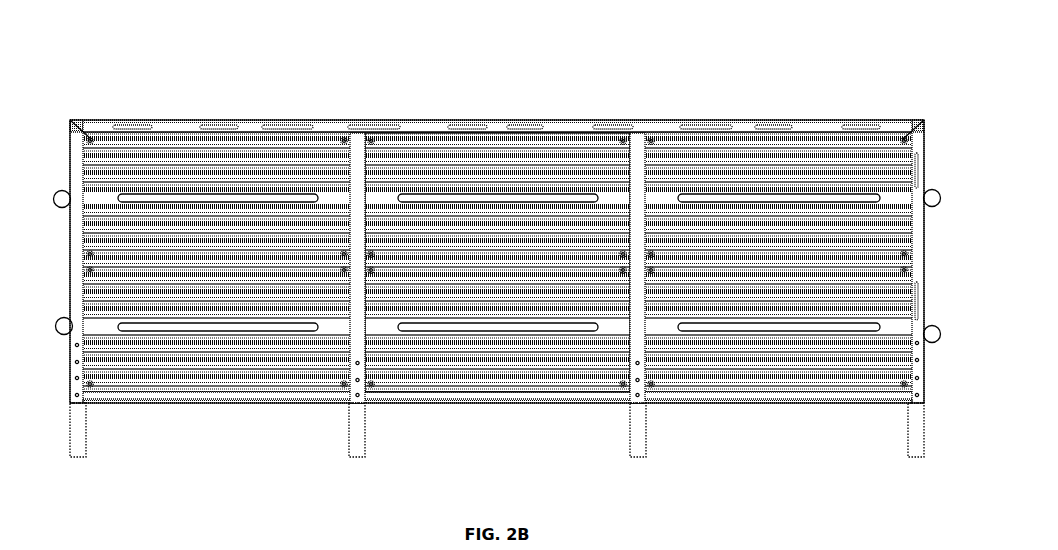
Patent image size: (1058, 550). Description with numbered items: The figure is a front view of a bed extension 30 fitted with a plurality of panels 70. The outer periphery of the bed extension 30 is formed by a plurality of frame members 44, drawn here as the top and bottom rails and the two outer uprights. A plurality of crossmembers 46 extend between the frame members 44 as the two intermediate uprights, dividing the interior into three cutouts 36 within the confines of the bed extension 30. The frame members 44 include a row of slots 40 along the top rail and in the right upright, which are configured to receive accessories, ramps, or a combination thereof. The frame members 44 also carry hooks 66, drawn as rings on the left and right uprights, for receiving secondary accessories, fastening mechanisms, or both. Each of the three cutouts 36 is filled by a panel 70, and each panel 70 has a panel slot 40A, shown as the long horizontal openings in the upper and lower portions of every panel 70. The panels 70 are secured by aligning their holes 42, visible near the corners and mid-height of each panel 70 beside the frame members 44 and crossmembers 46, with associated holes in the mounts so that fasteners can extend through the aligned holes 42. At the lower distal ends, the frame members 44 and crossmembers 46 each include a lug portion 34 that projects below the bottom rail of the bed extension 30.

The bed extension 30 is at (828, 40).
The lug portion 34 is at (82, 432).
The cutout 36 is at (567, 150).
The slot 40 is at (226, 127).
The panel slot 40A is at (290, 200).
The hole 42 is at (88, 138).
The frame member 44 is at (430, 124).
The crossmember 46 is at (357, 150).
The hook 66 is at (62, 190).
The panel 70 is at (181, 160).